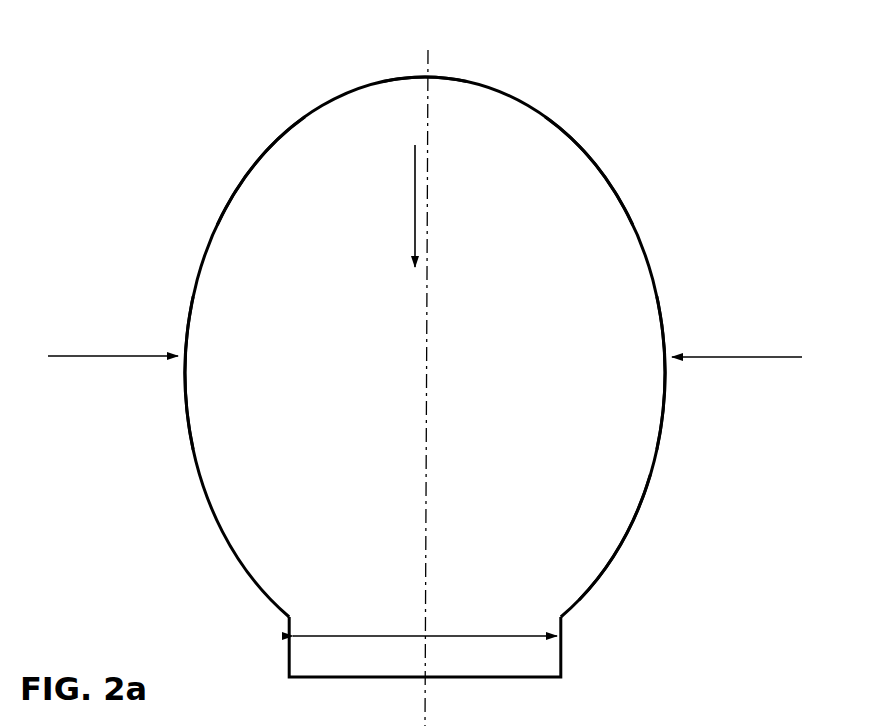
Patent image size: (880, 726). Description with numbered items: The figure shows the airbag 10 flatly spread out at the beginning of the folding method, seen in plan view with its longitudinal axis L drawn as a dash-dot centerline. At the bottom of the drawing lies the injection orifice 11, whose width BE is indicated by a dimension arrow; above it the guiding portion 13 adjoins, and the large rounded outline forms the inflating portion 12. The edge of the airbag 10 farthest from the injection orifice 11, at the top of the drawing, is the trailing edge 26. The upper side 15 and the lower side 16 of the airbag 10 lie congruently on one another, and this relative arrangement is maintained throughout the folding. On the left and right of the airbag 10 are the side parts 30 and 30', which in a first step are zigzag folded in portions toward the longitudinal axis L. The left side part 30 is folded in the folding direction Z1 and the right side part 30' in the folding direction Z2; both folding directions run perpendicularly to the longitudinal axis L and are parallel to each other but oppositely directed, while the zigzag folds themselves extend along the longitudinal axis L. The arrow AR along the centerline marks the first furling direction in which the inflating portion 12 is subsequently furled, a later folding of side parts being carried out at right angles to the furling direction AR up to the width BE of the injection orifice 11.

The airbag 10 is at (96, 228).
The injection orifice 11 is at (533, 658).
The inflating portion 12 is at (538, 160).
The guiding portion 13 is at (610, 467).
The upper side 15 is at (297, 192).
The lower side 16 is at (652, 252).
The trailing edge 26 is at (398, 78).
The left side part 30 is at (141, 372).
The right side part 30' is at (713, 372).
The furling direction AR is at (412, 210).
The folding direction Z1 is at (107, 354).
The folding direction Z2 is at (733, 355).
The width of the injection orifice BE is at (370, 631).
The longitudinal axis L is at (423, 690).